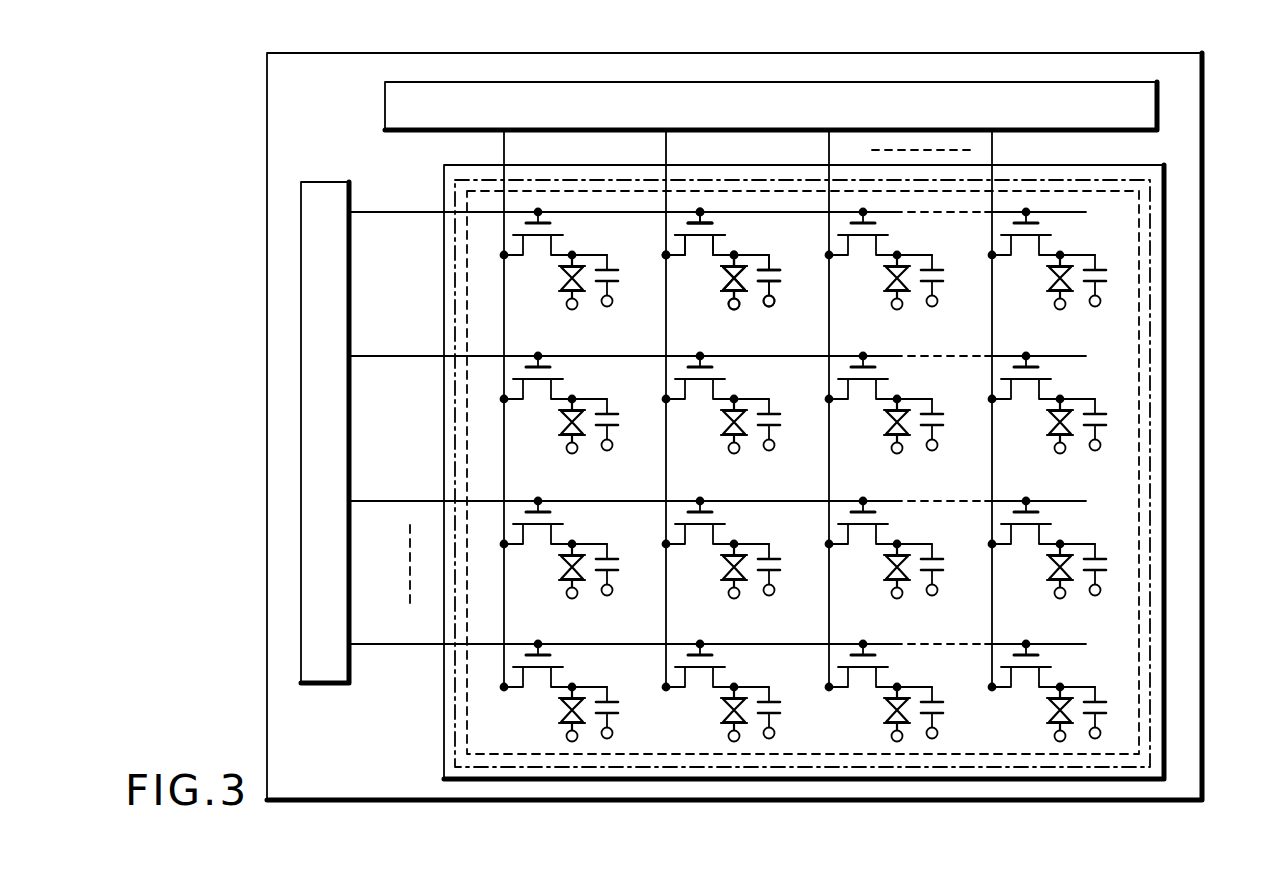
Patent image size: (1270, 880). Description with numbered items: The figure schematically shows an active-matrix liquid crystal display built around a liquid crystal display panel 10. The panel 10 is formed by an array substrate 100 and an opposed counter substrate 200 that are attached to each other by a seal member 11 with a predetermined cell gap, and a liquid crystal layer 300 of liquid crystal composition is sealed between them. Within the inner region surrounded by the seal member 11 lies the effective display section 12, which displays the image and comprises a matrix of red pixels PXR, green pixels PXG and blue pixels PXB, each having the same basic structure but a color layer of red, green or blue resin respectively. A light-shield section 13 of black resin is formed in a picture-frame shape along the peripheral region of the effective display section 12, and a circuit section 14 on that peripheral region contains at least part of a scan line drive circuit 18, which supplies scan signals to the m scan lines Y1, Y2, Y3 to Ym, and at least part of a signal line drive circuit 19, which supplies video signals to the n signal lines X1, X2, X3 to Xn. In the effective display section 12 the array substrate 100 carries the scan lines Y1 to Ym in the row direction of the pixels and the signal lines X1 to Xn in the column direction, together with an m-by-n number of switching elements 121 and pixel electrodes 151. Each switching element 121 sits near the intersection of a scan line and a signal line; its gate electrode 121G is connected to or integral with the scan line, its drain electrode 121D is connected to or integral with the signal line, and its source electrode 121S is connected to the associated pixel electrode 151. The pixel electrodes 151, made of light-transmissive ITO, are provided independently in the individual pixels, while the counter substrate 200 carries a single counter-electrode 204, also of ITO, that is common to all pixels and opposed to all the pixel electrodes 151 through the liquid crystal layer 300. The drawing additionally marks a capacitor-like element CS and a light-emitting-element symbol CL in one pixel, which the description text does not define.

The liquid crystal display panel 10 is at (1091, 46).
The circuit section 14 is at (312, 97).
The array substrate 100 is at (1203, 65).
The counter substrate 200 is at (1166, 186).
The seal member 11 is at (1150, 291).
The effective display section 12 is at (1112, 494).
The light-shield section 13 is at (1141, 372).
The scan line drive circuit 18 is at (323, 182).
The signal line drive circuit 19 is at (422, 82).
The switching element 121 is at (697, 256).
The gate electrode 121G is at (536, 501).
The drain electrode 121D is at (522, 529).
The source electrode 121S is at (554, 528).
The pixel electrode 151 is at (768, 257).
The liquid crystal layer 300 is at (727, 268).
The counter-electrode 204 is at (729, 297).
The capacitor CS is at (791, 416).
The light emitting element CL is at (721, 426).
The red pixel PXR is at (600, 243).
The green pixel PXG is at (784, 240).
The blue pixel PXB is at (926, 240).
The signal line X1 is at (521, 408).
The signal line X2 is at (683, 408).
The signal line X3 is at (848, 408).
The signal line Xn is at (1010, 408).
The scan line Y1 is at (717, 197).
The scan line Y2 is at (717, 341).
The scan line Y3 is at (717, 486).
The scan line Ym is at (717, 630).